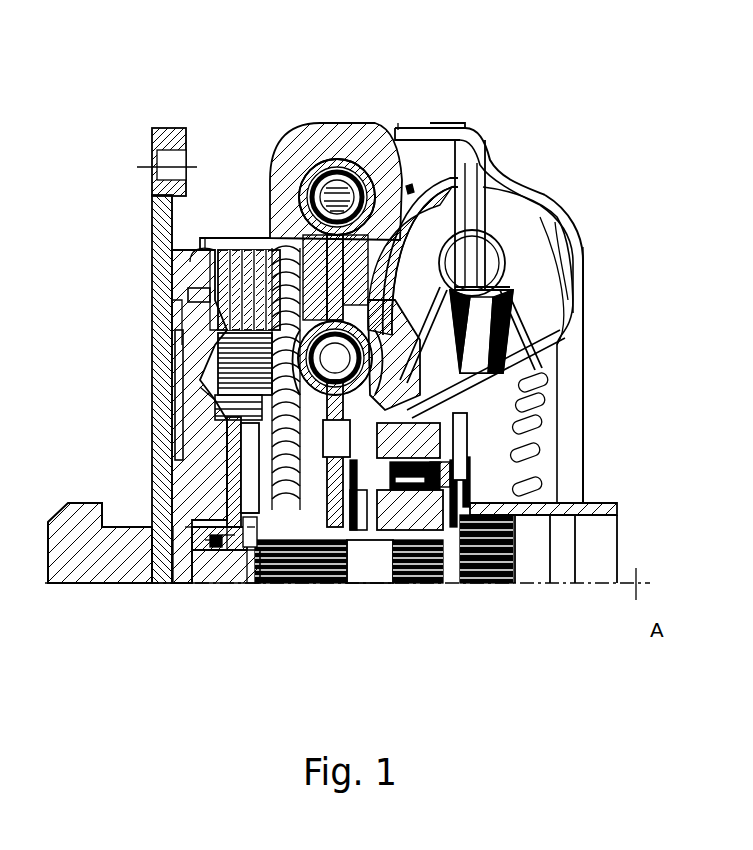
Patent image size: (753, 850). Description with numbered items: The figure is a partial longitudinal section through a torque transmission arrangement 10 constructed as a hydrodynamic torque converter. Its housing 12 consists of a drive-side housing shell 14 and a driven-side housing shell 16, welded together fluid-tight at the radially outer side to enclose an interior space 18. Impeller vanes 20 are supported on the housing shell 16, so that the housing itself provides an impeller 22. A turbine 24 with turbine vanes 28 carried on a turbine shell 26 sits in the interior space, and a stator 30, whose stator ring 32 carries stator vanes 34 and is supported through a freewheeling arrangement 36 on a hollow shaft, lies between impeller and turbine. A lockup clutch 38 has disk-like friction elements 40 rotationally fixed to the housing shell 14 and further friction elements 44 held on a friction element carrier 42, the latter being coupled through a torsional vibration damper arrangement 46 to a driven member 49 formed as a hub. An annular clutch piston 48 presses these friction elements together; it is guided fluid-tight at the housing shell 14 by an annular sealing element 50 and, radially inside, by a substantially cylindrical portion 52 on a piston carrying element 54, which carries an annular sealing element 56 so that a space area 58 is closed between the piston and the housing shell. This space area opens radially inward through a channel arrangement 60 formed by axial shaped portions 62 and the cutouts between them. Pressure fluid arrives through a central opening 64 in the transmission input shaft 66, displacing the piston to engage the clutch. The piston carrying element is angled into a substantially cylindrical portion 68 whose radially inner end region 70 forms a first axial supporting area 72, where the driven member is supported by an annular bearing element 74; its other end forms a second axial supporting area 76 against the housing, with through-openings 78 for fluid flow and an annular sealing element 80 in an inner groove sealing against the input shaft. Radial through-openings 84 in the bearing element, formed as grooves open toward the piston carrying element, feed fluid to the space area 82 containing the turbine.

The torque transmission arrangement 10 is at (550, 72).
The housing 12 is at (330, 125).
The housing shell 14 is at (187, 263).
The housing shell 16 is at (577, 262).
The interior space 18 is at (432, 165).
The impeller vanes 20 is at (548, 222).
The impeller 22 is at (590, 196).
The turbine 24 is at (488, 148).
The turbine shell 26 is at (411, 188).
The turbine vanes 28 is at (517, 223).
The stator 30 is at (485, 400).
The stator ring 32 is at (483, 418).
The stator vanes 34 is at (474, 337).
The freewheeling arrangement 36 is at (483, 480).
The lockup clutch 38 is at (212, 190).
The friction elements 40 is at (172, 222).
The friction element carrier 42 is at (290, 238).
The friction elements 44 is at (200, 297).
The torsional vibration damper arrangement 46 is at (384, 155).
The clutch piston 48 is at (185, 335).
The driven member 49 is at (313, 587).
The annular sealing element 50 is at (190, 248).
The substantially cylindrical portion 52 is at (153, 353).
The piston carrying element 54 is at (215, 485).
The annular sealing element 56 is at (197, 398).
The space area 58 is at (200, 320).
The channel arrangement 60 is at (225, 523).
The axial shaped portions 62 is at (227, 467).
The central opening 64 is at (225, 555).
The transmission input shaft 66 is at (235, 545).
The substantially cylindrical portion 68 is at (200, 545).
The radially inner end region 70 is at (183, 527).
The first axial supporting area 72 is at (360, 560).
The annular bearing element 74 is at (248, 545).
The second axial supporting area 76 is at (150, 535).
The through-openings 78 is at (185, 540).
The annular sealing element 80 is at (245, 540).
The space area 82 is at (464, 165).
The radial through-openings 84 is at (255, 545).